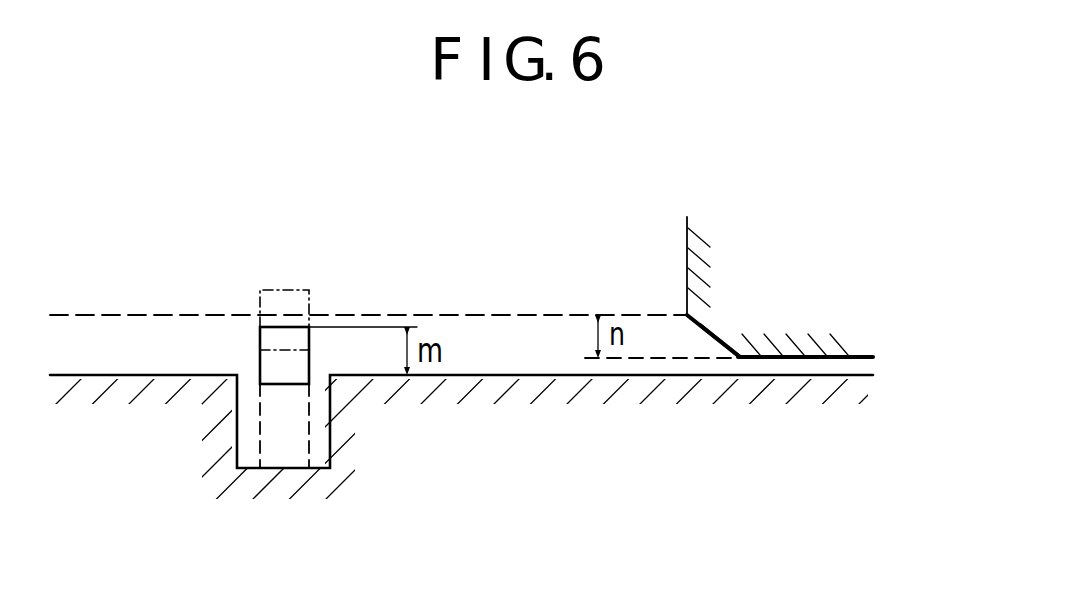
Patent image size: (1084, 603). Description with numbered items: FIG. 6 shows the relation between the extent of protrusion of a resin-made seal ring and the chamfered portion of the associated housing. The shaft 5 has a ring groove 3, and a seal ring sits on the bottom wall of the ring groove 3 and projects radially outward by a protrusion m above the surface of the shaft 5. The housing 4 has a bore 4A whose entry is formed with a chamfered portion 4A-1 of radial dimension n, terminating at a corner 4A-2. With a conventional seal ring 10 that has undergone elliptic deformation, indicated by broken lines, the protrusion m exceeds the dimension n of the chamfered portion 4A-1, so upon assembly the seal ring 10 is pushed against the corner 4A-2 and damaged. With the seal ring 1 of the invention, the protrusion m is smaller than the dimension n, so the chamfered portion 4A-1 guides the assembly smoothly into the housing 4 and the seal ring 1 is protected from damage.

The seal ring 1 is at (234, 309).
The ring groove 3 is at (283, 457).
The housing 4 is at (803, 290).
The bore 4A is at (800, 368).
The chamfered portion 4A-1 is at (717, 338).
The corner 4A-2 is at (685, 320).
The shaft 5 is at (628, 454).
The seal ring 10 is at (213, 294).